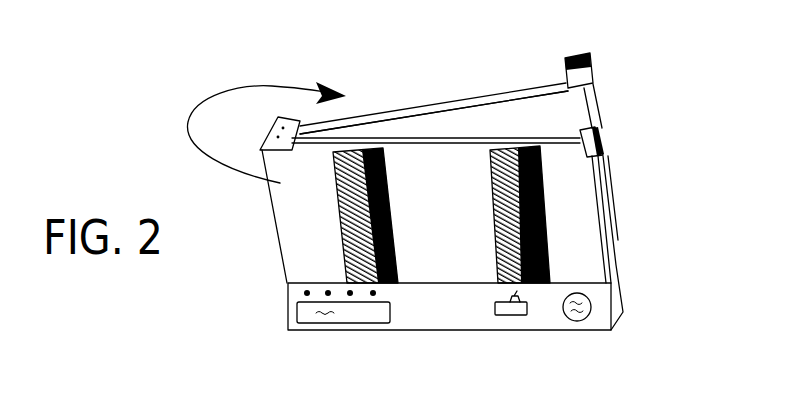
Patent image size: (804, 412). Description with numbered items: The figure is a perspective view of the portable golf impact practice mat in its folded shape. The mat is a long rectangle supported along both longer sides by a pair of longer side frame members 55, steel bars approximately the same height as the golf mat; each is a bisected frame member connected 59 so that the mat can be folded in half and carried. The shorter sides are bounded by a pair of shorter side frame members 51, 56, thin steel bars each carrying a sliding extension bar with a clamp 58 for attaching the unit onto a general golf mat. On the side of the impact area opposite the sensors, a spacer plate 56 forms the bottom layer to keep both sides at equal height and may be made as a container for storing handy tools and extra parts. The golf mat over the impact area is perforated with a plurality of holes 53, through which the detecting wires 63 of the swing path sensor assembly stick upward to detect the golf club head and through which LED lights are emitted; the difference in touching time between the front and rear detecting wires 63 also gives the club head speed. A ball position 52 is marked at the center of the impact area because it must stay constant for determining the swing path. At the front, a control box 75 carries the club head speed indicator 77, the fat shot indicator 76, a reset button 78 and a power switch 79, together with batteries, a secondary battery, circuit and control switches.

The shorter side frame member 51 is at (596, 110).
The ball position 52 is at (452, 217).
The perforated holes 53 is at (375, 138).
The longer side frame members 55 is at (428, 138).
The spacer plate 56 is at (606, 235).
The clamp 58 is at (578, 56).
The connection of bisected frame members 59 is at (269, 131).
The detecting wires 63 is at (353, 137).
The control box 75 is at (449, 325).
The fat shot indicator 76 is at (288, 284).
The club head speed indicator 77 is at (340, 322).
The reset button 78 is at (589, 318).
The power switch 79 is at (522, 317).